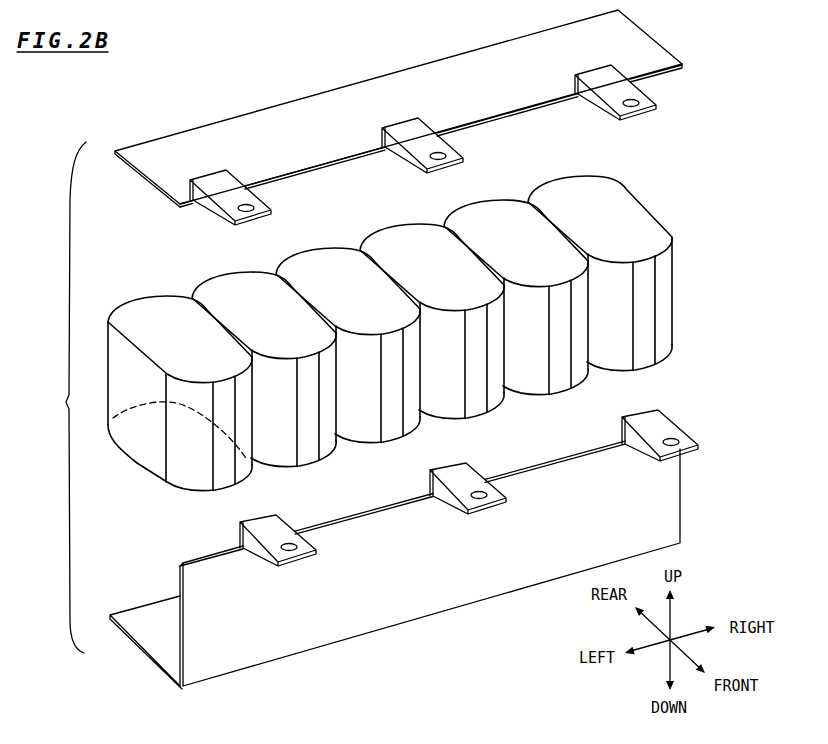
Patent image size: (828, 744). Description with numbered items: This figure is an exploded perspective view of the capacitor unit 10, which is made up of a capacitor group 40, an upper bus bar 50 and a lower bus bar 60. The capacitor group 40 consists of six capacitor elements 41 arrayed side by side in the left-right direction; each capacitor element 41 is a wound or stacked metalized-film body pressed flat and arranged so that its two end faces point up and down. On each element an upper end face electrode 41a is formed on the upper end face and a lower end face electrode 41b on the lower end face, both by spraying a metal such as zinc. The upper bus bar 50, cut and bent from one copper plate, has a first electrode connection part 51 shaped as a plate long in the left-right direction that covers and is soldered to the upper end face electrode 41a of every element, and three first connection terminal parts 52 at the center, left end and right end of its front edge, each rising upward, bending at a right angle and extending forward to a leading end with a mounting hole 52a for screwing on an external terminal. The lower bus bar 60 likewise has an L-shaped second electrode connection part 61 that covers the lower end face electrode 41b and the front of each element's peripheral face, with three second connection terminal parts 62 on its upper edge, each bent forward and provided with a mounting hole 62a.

The capacitor unit 10 is at (386, 349).
The capacitor group 40 is at (393, 333).
The capacitor element 41 is at (381, 334).
The upper end face electrode 41a is at (140, 332).
The lower end face electrode 41b is at (152, 445).
The upper bus bar 50 is at (400, 117).
The first electrode connection part 51 is at (338, 103).
The first connection terminal part 52 is at (436, 117).
The mounting hole 52a is at (250, 207).
The lower bus bar 60 is at (429, 526).
The second electrode connection part 61 is at (455, 590).
The second connection terminal part 62 is at (490, 464).
The mounting hole 62a is at (288, 543).